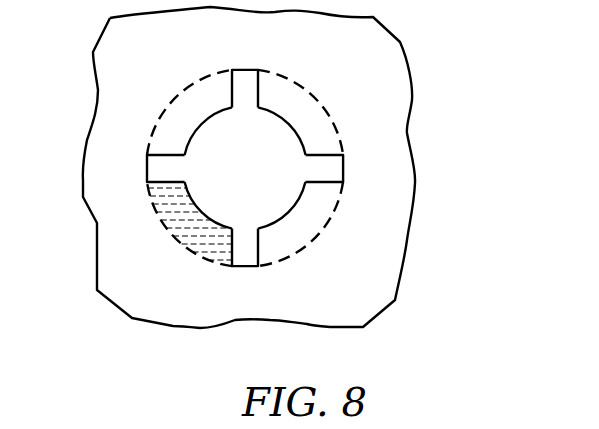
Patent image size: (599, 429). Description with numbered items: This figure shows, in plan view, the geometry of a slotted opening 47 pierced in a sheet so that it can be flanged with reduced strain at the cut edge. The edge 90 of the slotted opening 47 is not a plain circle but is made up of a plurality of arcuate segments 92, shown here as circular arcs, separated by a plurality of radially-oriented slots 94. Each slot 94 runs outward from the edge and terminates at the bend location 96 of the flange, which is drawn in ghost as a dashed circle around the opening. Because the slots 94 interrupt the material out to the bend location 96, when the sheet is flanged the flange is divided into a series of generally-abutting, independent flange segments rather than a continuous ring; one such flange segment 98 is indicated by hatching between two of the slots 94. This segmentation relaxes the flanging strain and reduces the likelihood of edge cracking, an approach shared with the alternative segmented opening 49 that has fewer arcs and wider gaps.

The slotted opening 47 is at (242, 143).
The edge 90 is at (351, 173).
The arcuate segments 92 is at (296, 125).
The radially-oriented slots 94 is at (345, 168).
The bend location 96 is at (323, 230).
The flange segment 98 is at (193, 233).
The segmented opening 49 is at (18, 427).